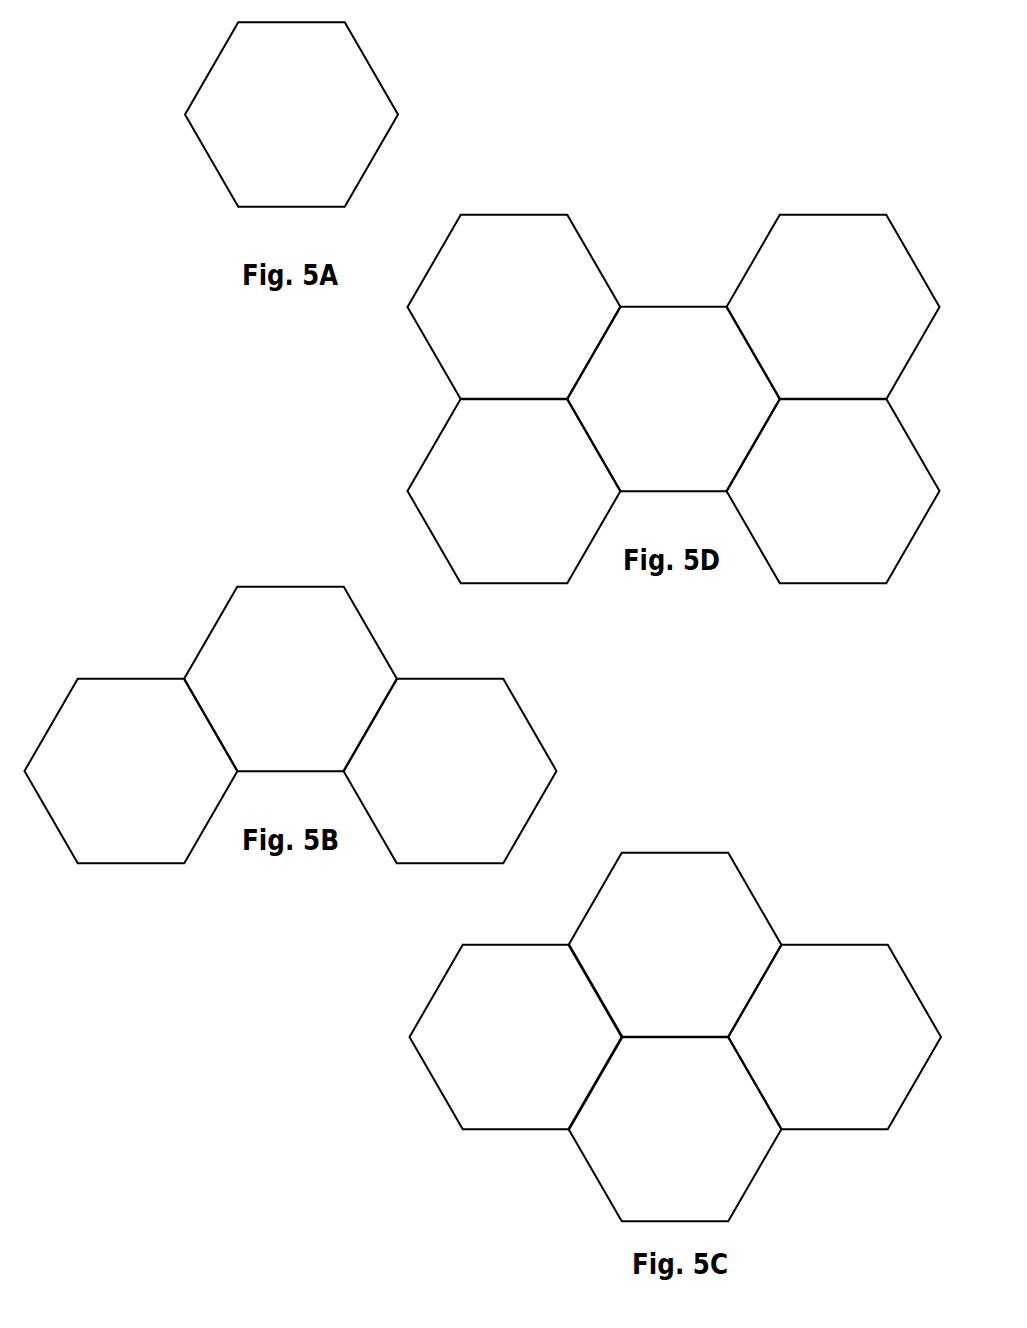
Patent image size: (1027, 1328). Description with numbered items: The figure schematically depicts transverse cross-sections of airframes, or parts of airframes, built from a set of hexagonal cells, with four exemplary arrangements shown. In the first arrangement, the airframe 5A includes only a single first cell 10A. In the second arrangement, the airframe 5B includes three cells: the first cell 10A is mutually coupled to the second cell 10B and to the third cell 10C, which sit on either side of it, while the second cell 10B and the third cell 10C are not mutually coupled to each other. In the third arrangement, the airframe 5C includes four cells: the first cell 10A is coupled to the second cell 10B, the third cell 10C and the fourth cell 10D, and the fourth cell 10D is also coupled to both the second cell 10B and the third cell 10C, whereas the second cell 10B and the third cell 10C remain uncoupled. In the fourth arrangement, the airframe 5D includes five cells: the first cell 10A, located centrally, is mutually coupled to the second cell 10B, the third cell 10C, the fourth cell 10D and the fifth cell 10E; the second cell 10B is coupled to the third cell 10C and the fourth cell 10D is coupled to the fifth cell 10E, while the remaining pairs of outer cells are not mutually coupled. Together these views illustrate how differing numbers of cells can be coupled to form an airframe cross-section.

In FIG. 5A, the airframe 5A is at (248, 145).
In FIG. 5B, the airframe 5B is at (322, 727).
In FIG. 5C, the airframe 5C is at (639, 1012).
In FIG. 5D, the airframe 5D is at (619, 398).
In FIG. 5A, the first cell 10A is at (193, 135).
In FIG. 5D, the first cell 10A is at (713, 302).
In FIG. 5B, the first cell 10A is at (274, 588).
In FIG. 5C, the first cell 10A is at (685, 850).
In FIG. 5D, the second cell 10B is at (412, 323).
In FIG. 5B, the second cell 10B is at (153, 864).
In FIG. 5C, the second cell 10B is at (432, 1078).
In FIG. 5D, the third cell 10C is at (417, 508).
In FIG. 5B, the third cell 10C is at (523, 713).
In FIG. 5C, the third cell 10C is at (807, 943).
In FIG. 5D, the fourth cell 10D is at (831, 583).
In FIG. 5C, the fourth cell 10D is at (752, 1175).
In FIG. 5D, the fifth cell 10E is at (824, 214).